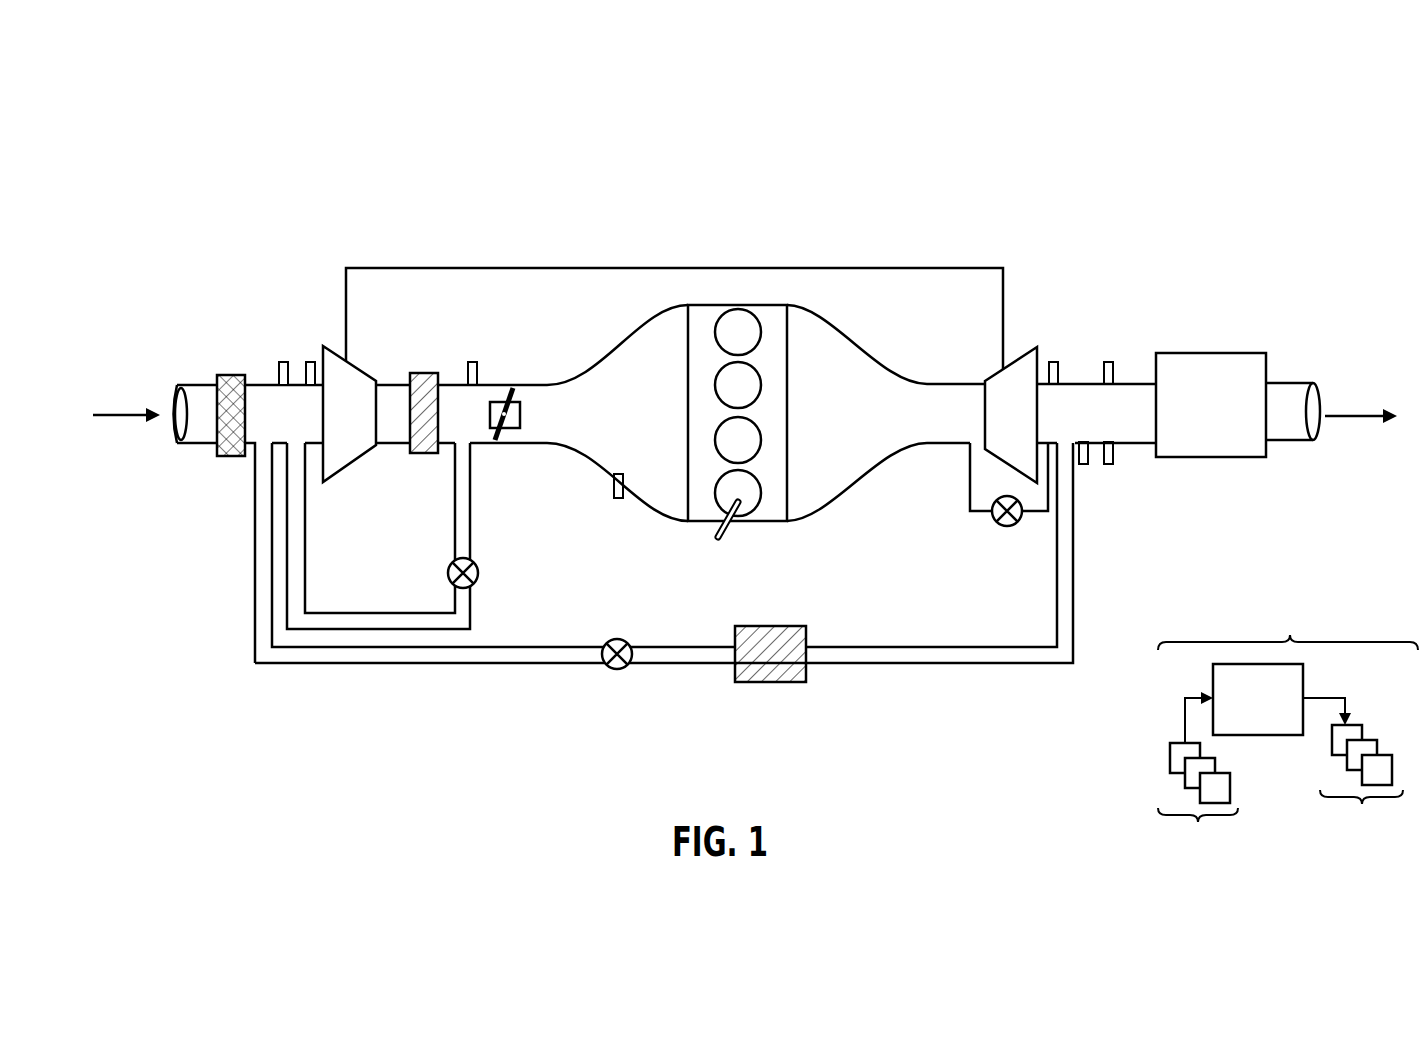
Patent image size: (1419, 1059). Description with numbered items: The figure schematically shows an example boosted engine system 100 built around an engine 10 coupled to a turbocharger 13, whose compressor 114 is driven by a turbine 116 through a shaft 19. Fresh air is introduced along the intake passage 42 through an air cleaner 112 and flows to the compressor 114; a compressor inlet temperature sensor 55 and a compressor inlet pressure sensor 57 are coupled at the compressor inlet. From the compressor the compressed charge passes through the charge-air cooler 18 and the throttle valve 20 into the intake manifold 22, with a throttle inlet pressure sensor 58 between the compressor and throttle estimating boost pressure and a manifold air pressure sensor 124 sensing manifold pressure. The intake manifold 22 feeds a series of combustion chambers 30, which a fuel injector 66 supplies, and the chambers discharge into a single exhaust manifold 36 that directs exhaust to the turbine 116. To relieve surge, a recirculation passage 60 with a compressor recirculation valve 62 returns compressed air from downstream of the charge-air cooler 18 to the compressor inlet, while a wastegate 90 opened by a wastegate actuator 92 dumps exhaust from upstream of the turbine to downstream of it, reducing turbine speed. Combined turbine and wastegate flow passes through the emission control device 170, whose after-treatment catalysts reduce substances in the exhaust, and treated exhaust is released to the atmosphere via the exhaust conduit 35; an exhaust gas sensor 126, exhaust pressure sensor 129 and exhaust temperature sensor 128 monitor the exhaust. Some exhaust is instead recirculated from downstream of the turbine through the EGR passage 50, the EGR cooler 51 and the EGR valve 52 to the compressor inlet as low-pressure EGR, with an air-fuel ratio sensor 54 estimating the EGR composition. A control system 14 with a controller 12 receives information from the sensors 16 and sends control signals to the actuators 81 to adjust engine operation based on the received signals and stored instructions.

The engine system 100 is at (1341, 92).
The turbocharger 13 is at (427, 308).
The engine 10 is at (787, 392).
The combustion chambers 30 is at (760, 325).
The fuel injector 66 is at (733, 527).
The intake manifold 22 is at (648, 426).
The exhaust manifold 36 is at (868, 424).
The intake passage 42 is at (205, 445).
The air cleaner 112 is at (228, 375).
The compressor 114 is at (364, 424).
The turbine 116 is at (1026, 426).
The shaft 19 is at (900, 268).
The charge-air cooler 18 is at (420, 373).
The throttle valve 20 is at (528, 407).
The compressor inlet temperature sensor 55 is at (283, 362).
The compressor inlet pressure sensor 57 is at (310, 362).
The throttle inlet pressure sensor 58 is at (472, 362).
The manifold air pressure sensor 124 is at (613, 480).
The exhaust gas sensor 126 is at (1053, 362).
The exhaust pressure sensor 129 is at (1108, 362).
The exhaust temperature sensor 128 is at (1108, 464).
The air-fuel ratio sensor 54 is at (1083, 464).
The wastegate 90 is at (970, 492).
The wastegate actuator 92 is at (1000, 527).
The emission control device 170 is at (1196, 353).
The exhaust conduit 35 is at (1297, 383).
The recirculation passage 60 is at (472, 522).
The compressor recirculation valve 62 is at (477, 563).
The EGR passage 50 is at (866, 663).
The EGR cooler 51 is at (760, 626).
The EGR valve 52 is at (608, 640).
The control system 14 is at (1288, 618).
The controller 12 is at (1268, 703).
The sensors 16 is at (1198, 805).
The actuators 81 is at (1361, 788).